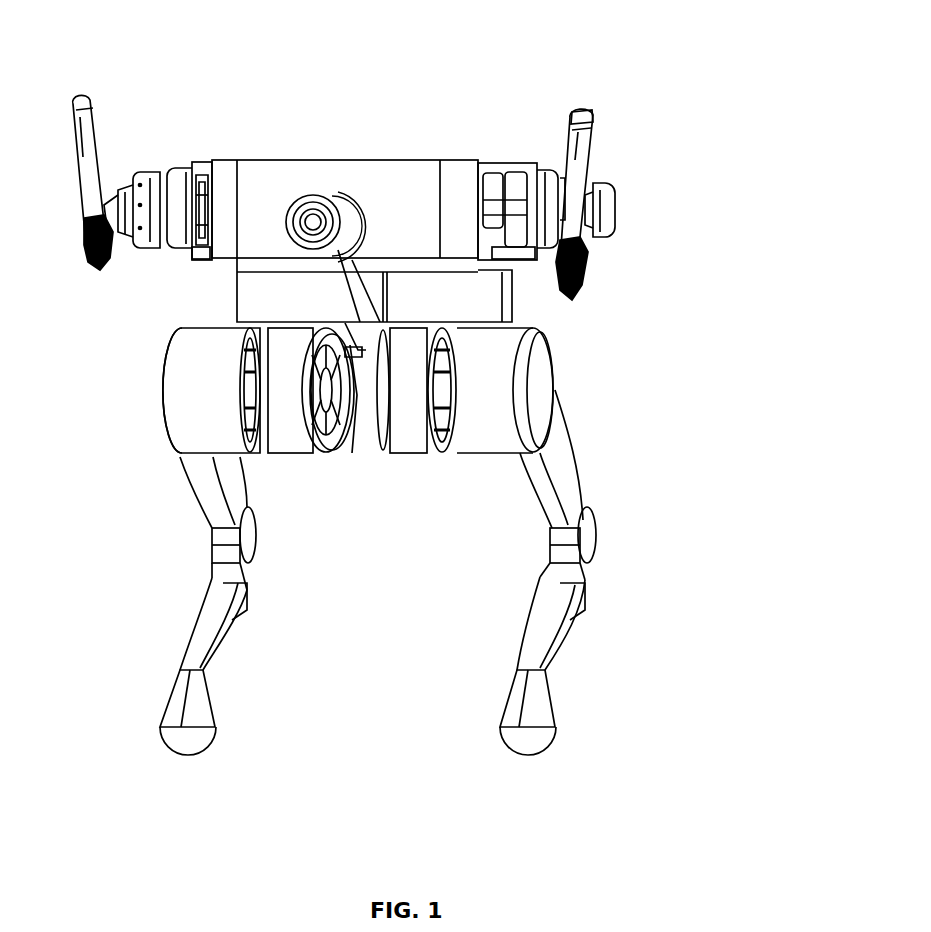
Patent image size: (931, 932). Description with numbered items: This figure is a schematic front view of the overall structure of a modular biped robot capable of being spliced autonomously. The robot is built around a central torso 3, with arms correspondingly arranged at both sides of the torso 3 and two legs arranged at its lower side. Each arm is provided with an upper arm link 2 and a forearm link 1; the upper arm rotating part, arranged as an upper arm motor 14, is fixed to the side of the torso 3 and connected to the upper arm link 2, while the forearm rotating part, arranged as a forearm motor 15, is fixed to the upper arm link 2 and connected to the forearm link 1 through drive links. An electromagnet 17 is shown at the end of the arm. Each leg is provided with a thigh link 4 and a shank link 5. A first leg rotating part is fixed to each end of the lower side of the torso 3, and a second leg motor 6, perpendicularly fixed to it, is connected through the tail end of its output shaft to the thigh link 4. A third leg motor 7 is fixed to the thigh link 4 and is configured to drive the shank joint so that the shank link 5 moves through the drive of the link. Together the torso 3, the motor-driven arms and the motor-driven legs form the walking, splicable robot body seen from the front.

The forearm link 1 is at (580, 172).
The upper arm link 2 is at (607, 242).
The torso 3 is at (413, 260).
The thigh link 4 is at (573, 480).
The shank link 5 is at (545, 600).
The second leg motor 6 is at (401, 455).
The third leg motor 7 is at (477, 447).
The upper arm motor 14 is at (190, 178).
The forearm motor 15 is at (147, 178).
The electromagnet 17 is at (593, 122).